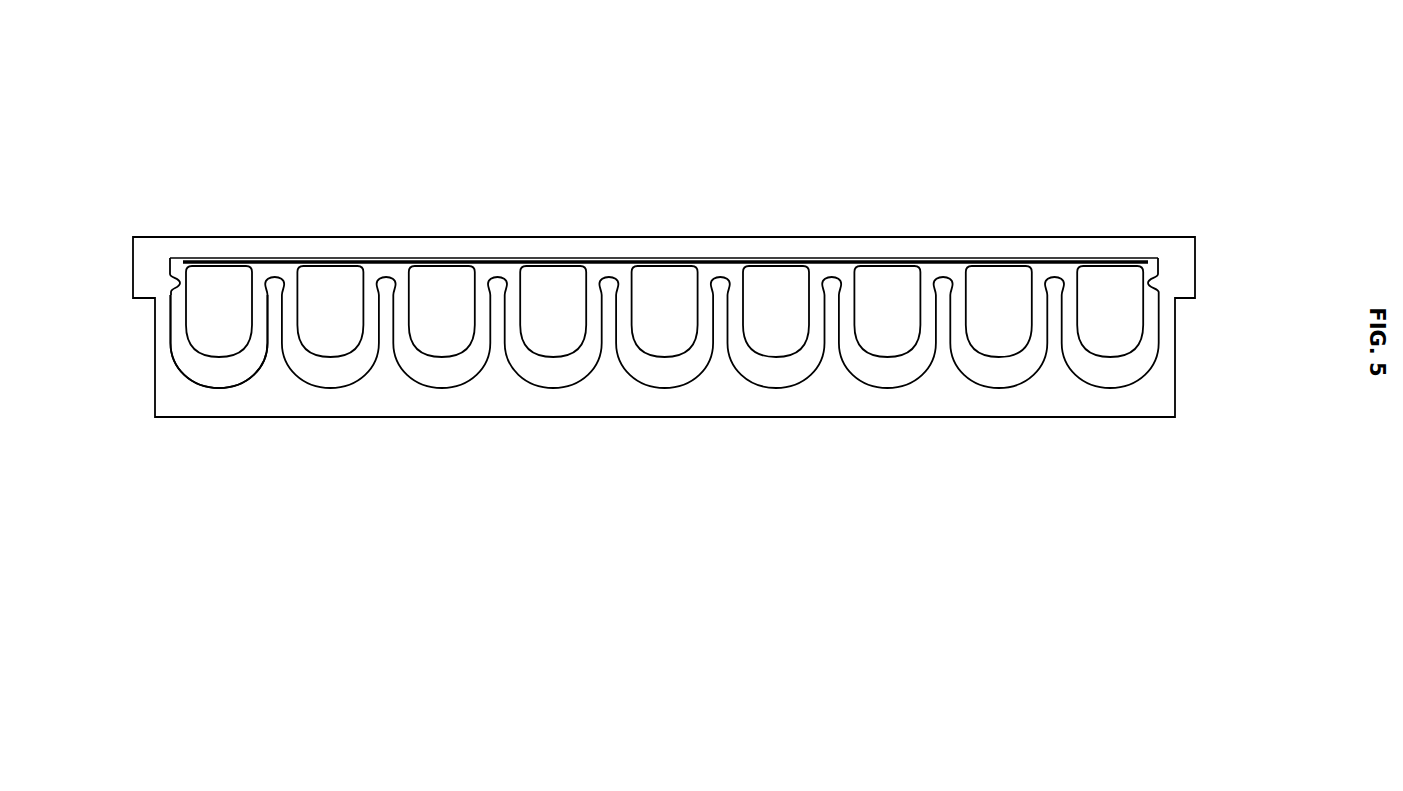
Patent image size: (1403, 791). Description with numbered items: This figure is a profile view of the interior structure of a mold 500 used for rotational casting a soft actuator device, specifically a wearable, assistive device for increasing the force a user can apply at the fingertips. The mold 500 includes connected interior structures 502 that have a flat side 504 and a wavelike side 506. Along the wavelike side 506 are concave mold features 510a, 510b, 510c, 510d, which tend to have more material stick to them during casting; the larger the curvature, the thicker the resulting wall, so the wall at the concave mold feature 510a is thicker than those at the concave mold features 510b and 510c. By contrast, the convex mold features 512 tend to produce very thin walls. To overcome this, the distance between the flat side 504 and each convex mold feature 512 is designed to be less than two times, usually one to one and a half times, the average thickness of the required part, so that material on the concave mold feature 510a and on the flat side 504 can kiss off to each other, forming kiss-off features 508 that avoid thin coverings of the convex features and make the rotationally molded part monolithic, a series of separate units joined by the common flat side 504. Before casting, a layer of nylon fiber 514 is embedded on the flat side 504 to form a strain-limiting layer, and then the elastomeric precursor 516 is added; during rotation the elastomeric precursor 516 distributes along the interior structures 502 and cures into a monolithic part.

The mold 500 is at (240, 88).
The connected interior structures 502 is at (277, 279).
The flat side 504 is at (830, 262).
The wavelike side 506 is at (183, 366).
The kiss-off features 508 is at (943, 268).
The concave mold feature 510a is at (665, 388).
The concave mold feature 510b is at (710, 310).
The concave mold feature 510c is at (727, 312).
The concave mold feature 510d is at (170, 330).
The convex mold feature 512 is at (830, 273).
The nylon fiber layer 514 is at (325, 262).
The elastomeric precursor 516 is at (482, 322).